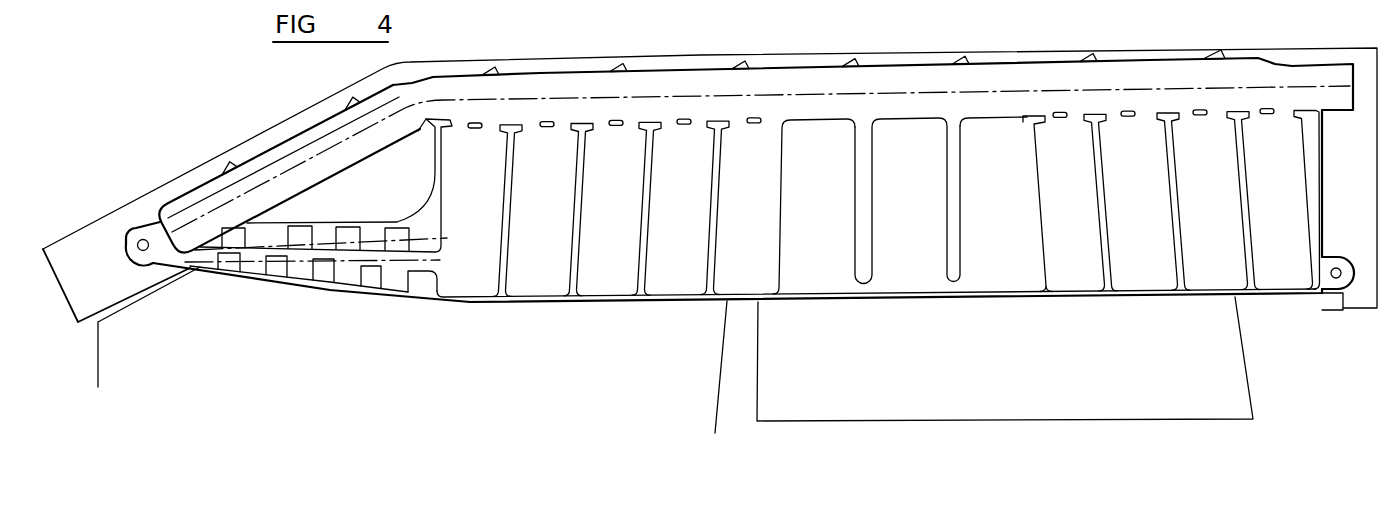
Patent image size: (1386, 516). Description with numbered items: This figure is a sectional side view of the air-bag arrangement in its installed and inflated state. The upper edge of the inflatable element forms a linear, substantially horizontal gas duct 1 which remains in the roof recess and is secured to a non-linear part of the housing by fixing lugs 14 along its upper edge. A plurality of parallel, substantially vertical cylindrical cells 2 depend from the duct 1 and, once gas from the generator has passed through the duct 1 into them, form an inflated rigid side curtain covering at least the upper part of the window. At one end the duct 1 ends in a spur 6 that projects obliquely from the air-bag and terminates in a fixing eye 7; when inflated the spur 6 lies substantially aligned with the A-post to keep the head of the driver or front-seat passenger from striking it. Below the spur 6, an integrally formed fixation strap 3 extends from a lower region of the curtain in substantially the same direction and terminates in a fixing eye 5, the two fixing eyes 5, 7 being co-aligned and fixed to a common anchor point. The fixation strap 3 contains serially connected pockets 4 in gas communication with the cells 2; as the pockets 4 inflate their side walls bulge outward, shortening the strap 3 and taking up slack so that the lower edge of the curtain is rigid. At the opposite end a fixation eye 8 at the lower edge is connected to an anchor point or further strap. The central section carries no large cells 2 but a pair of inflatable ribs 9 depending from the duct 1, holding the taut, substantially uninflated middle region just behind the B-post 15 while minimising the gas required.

The gas duct 1 is at (1040, 82).
The cells 2 is at (477, 268).
The fixation strap 3 is at (300, 290).
The pockets 4 is at (300, 271).
The fixing eye 5 is at (143, 243).
The spur 6 is at (292, 153).
The fixing eye 7 is at (143, 244).
The fixation eye 8 is at (1342, 310).
The inflatable ribs 9 is at (872, 258).
The fixing lugs 14 is at (620, 62).
The B-post 15 is at (735, 384).